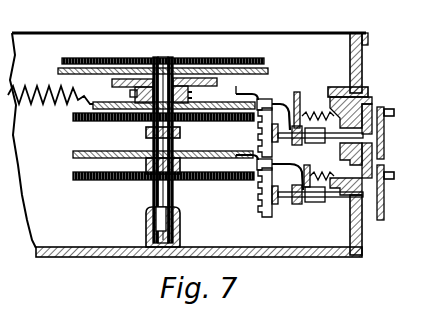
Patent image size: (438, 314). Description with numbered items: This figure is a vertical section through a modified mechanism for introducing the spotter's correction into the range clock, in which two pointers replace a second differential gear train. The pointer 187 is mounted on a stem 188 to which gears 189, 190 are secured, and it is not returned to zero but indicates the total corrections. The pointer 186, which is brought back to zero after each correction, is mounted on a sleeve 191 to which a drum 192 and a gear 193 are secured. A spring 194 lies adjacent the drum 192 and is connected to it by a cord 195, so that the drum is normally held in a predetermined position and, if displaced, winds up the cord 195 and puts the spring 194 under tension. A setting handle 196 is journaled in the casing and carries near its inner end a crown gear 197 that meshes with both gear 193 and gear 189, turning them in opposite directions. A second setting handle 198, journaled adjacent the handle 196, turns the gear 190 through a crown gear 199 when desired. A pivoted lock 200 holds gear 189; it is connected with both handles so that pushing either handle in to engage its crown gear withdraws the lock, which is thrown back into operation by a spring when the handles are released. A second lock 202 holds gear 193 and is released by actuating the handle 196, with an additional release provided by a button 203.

The pointer 186 is at (209, 68).
The pointer 187 is at (114, 58).
The stem 188 is at (181, 135).
The gear 189 is at (98, 151).
The gear 190 is at (90, 180).
The sleeve 191 is at (218, 81).
The drum 192 is at (93, 105).
The gear 193 is at (73, 117).
The spring 194 is at (37, 86).
The cord 195 is at (112, 83).
The setting handle 196 is at (383, 108).
The crown gear 197 is at (262, 115).
The second setting handle 198 is at (381, 221).
The crown gear 199 is at (260, 210).
The pivoted lock 200 is at (277, 143).
The second lock 202 is at (254, 103).
The button 203 is at (364, 97).